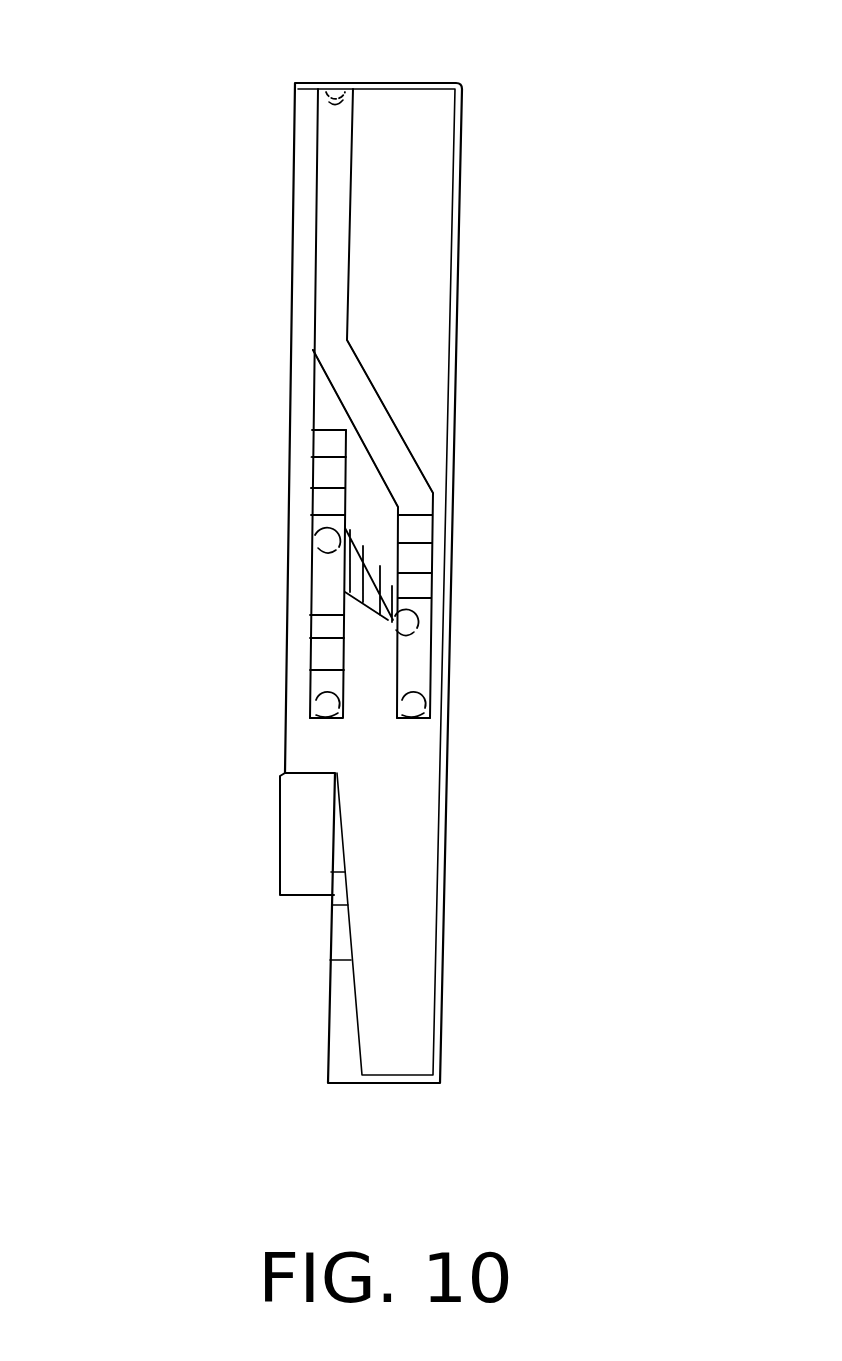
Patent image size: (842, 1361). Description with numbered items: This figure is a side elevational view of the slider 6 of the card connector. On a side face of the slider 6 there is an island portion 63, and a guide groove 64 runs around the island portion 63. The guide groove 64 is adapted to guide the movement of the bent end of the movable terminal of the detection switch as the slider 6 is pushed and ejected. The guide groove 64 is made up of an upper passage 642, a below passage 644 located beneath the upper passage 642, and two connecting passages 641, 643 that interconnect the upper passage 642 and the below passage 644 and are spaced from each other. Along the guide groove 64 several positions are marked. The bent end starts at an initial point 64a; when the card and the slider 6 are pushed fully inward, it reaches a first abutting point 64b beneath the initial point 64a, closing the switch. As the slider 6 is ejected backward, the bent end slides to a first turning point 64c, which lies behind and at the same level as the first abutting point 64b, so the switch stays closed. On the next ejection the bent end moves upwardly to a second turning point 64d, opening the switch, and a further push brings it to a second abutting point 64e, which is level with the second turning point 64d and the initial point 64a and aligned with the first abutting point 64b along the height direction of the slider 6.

The slider 6 is at (203, 155).
The island portion 63 is at (360, 485).
The guide groove 64 is at (335, 248).
The initial point 64a is at (341, 85).
The first abutting point 64b is at (412, 703).
The first turning point 64c is at (412, 625).
The second turning point 64d is at (328, 535).
The second abutting point 64e is at (322, 700).
The connecting passage 641 is at (375, 428).
The upper passage 642 is at (323, 440).
The connecting passage 643 is at (352, 590).
The below passage 644 is at (408, 555).